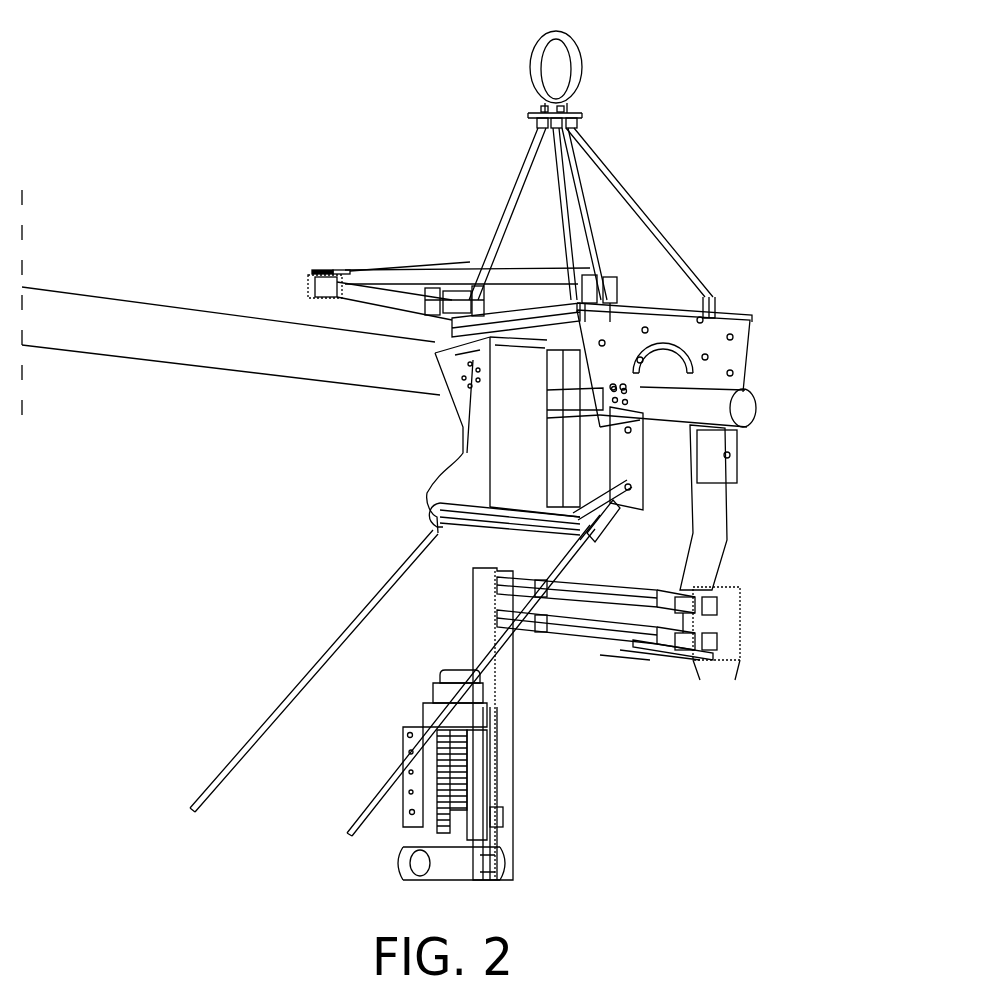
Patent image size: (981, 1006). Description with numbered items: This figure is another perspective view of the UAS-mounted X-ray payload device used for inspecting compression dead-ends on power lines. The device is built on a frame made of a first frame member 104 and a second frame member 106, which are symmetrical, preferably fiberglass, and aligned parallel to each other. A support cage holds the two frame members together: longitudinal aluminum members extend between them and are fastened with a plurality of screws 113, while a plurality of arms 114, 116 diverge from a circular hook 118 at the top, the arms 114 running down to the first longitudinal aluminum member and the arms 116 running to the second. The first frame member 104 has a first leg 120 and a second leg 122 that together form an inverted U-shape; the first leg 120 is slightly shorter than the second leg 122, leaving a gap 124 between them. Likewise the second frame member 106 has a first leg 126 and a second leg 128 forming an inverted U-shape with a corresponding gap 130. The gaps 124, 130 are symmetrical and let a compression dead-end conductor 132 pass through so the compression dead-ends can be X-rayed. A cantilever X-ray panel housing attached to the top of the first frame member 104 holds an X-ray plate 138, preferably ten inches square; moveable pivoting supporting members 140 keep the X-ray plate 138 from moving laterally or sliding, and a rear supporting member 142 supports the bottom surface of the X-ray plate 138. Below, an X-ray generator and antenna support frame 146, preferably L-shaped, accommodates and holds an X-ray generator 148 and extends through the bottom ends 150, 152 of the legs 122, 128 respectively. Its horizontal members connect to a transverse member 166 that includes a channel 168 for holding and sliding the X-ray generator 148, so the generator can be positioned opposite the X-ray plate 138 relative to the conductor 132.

The first frame member 104 is at (445, 345).
The second frame member 106 is at (743, 345).
The screws 113 is at (707, 325).
The arms 114 is at (570, 242).
The arms 116 is at (580, 200).
The circular hook 118 is at (533, 54).
The first leg 120 is at (473, 430).
The second leg 122 is at (567, 472).
The gap 124 is at (535, 462).
The first leg 126 is at (627, 517).
The second leg 128 is at (717, 525).
The gap 130 is at (653, 478).
The compression dead-end conductor 132 is at (283, 352).
The X-ray plate 138 is at (440, 273).
The moveable pivoting supporting members 140 is at (315, 271).
The rear supporting member 142 is at (393, 318).
The X-ray generator and antenna support frame 146 is at (542, 707).
The X-ray generator 148 is at (443, 820).
The bottom end 150 is at (557, 643).
The bottom end 152 is at (697, 663).
The transverse member 166 is at (503, 810).
The channel 168 is at (488, 728).